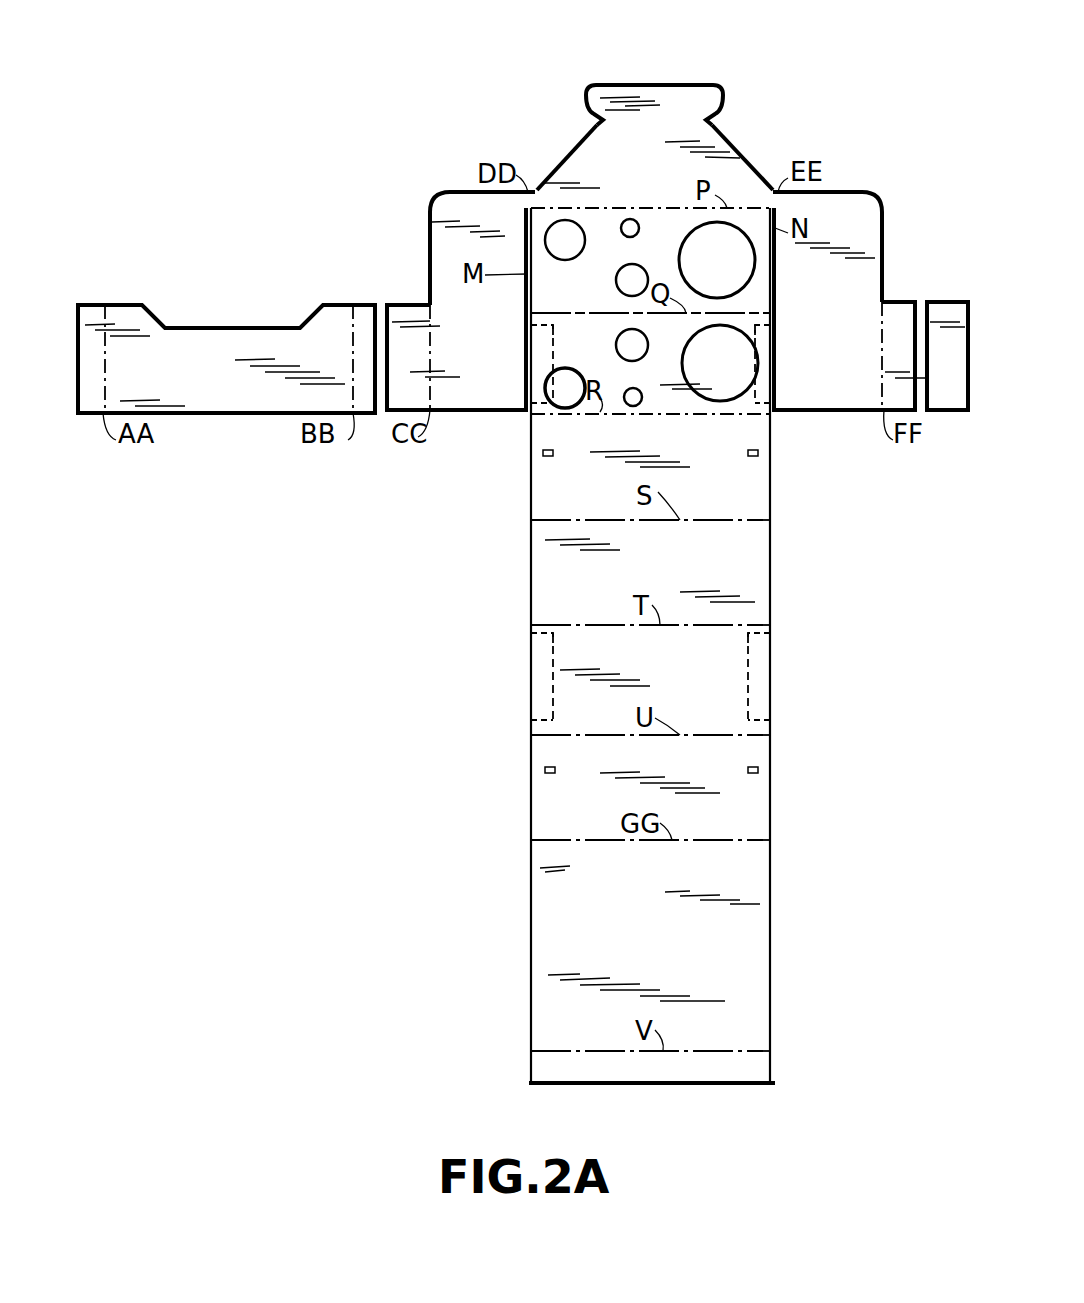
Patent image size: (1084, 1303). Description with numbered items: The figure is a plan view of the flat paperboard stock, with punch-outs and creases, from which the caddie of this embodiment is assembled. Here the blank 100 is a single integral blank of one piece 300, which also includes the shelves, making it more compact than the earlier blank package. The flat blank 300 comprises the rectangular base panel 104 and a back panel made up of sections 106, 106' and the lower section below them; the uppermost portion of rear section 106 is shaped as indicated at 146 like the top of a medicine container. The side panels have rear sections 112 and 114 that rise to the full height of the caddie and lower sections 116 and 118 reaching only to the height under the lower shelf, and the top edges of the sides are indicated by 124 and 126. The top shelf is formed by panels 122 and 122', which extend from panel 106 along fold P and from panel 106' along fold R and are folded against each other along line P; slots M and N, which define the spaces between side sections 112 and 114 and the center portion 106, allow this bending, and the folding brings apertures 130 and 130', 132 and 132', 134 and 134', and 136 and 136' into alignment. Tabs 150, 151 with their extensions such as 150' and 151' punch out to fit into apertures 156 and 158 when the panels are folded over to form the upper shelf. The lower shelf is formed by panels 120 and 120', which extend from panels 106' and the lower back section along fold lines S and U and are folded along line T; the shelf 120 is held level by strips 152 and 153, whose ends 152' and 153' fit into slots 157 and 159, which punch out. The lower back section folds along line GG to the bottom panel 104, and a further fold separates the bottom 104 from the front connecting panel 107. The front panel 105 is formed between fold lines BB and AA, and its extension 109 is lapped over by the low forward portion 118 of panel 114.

The flat blank 300 is at (463, 74).
The blank 100 is at (405, 665).
The medicine-container-shaped top 146 is at (664, 85).
The back panel section 106 is at (655, 149).
The top edge of side 124 is at (447, 193).
The rear section of side panel 112 is at (430, 217).
The lower section of side panel 116 is at (415, 302).
The top edge of side 126 is at (868, 192).
The rear section of side panel 114 is at (862, 216).
The lower section of side panel 118 is at (937, 302).
The extension of front panel 109 is at (90, 305).
The front panel 105 is at (252, 328).
The aperture 136 is at (526, 230).
The aperture 134 is at (635, 198).
The aperture 130 is at (717, 260).
The aperture 132 is at (597, 280).
The aperture 132' is at (602, 343).
The aperture 130' is at (720, 363).
The aperture 136' is at (561, 407).
The aperture 134' is at (630, 417).
The top shelf panel 122 is at (683, 310).
The top shelf panel 122' is at (681, 402).
The tab extension 150' is at (502, 310).
The tab 150 is at (501, 364).
The tab extension 151' is at (799, 310).
The tab 151 is at (795, 364).
The aperture 158 is at (542, 453).
The aperture 156 is at (760, 453).
The back panel section 106' is at (695, 500).
The lower shelf panel 120 is at (684, 645).
The strip end 152' is at (505, 616).
The strip 152 is at (554, 676).
The strip end 153' is at (796, 616).
The strip 153 is at (786, 676).
The lower shelf panel 120' is at (686, 628).
The slot 159 is at (544, 770).
The slot 157 is at (760, 770).
The base panel 104 is at (755, 965).
The front connecting panel 107 is at (758, 1071).